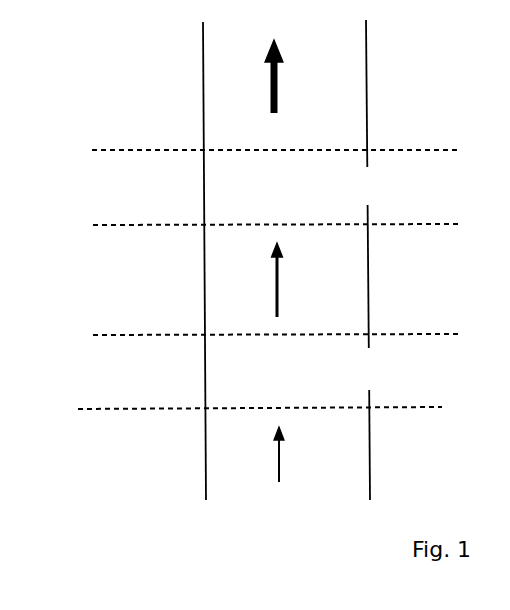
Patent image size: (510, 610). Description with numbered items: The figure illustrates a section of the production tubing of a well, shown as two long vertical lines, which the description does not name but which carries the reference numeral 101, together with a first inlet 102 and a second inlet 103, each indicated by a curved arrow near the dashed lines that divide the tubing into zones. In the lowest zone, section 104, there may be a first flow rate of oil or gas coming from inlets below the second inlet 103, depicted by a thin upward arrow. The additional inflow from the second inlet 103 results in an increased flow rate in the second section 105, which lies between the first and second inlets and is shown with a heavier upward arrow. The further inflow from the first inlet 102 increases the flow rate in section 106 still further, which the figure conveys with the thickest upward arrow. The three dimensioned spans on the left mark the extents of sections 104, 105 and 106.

The channel boundary lines 101 is at (367, 93).
The first inlet 102 is at (348, 170).
The second inlet 103 is at (351, 353).
The section 104 is at (133, 412).
The second section 105 is at (131, 228).
The section 106 is at (129, 150).